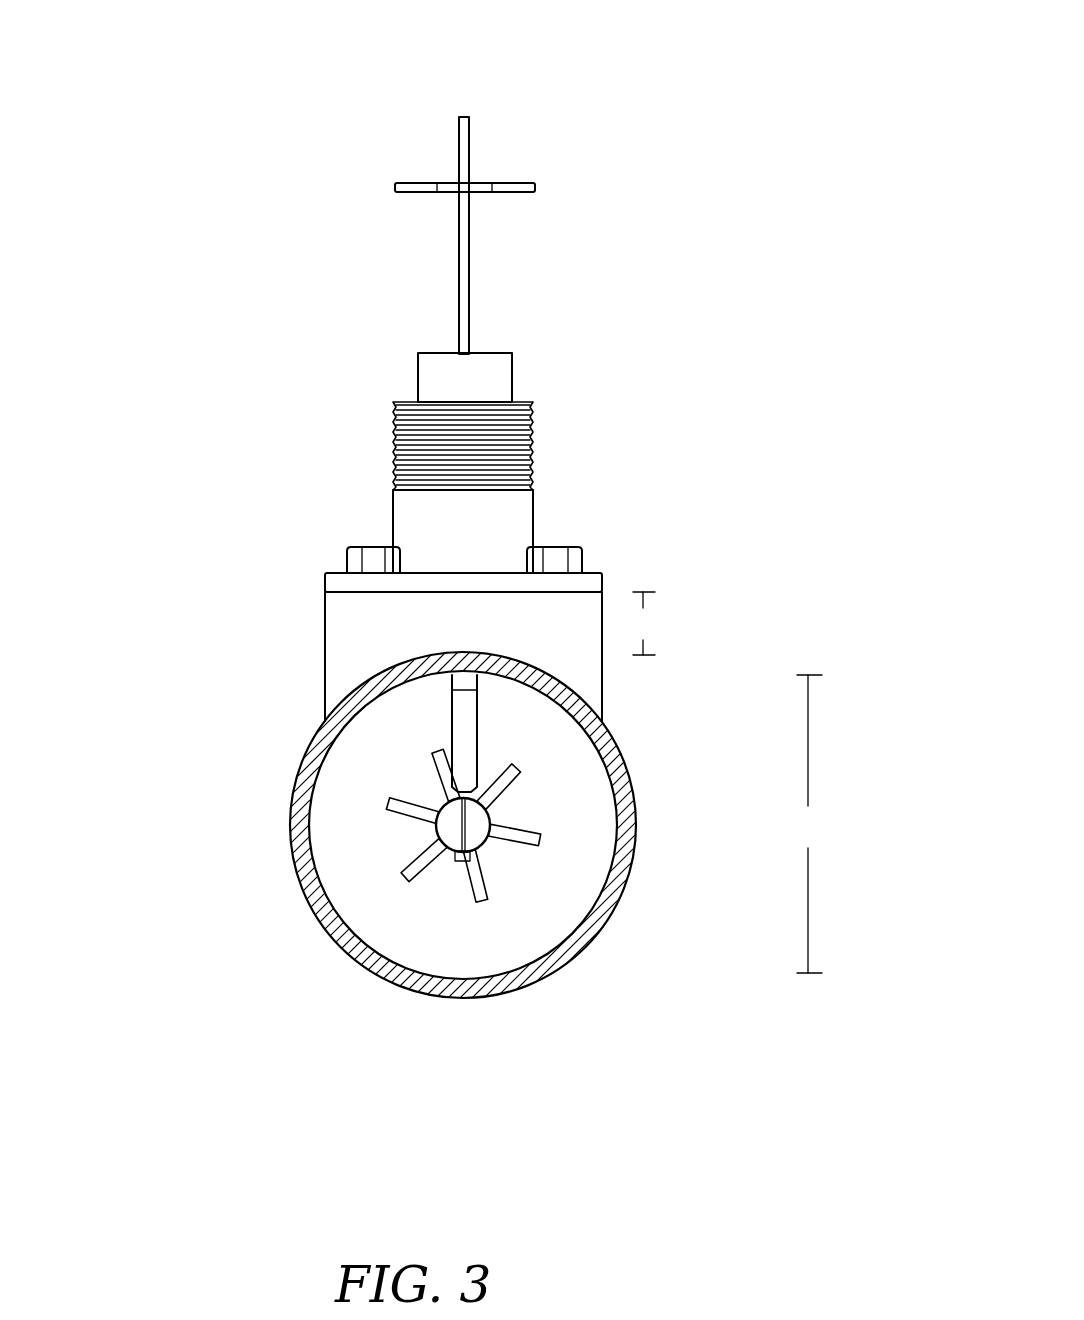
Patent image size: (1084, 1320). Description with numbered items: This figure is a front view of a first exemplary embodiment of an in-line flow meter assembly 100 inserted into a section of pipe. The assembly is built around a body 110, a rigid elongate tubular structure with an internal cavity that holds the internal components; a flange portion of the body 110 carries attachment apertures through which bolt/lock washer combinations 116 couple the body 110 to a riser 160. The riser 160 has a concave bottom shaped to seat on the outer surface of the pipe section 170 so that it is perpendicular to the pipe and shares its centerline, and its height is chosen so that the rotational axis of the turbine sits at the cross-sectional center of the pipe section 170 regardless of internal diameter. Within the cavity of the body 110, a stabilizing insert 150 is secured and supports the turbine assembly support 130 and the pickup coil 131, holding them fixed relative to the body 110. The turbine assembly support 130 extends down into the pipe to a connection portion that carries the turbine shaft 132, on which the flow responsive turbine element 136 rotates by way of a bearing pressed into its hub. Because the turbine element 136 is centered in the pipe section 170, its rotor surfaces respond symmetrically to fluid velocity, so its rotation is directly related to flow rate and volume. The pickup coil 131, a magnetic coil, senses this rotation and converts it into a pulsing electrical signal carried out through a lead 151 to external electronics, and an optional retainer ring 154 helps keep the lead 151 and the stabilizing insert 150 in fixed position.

The in-line flow meter assembly 100 is at (278, 58).
The body 110 is at (533, 508).
The bolt/lock washer combinations 116 is at (347, 557).
The turbine assembly support 130 is at (477, 763).
The pickup coil 131 is at (452, 690).
The turbine shaft 132 is at (448, 833).
The flow responsive turbine element 136 is at (437, 819).
The stabilizing insert 150 is at (418, 376).
The lead 151 is at (458, 293).
The retainer ring 154 is at (535, 187).
The riser 160 is at (365, 617).
The pipe section 170 is at (605, 922).